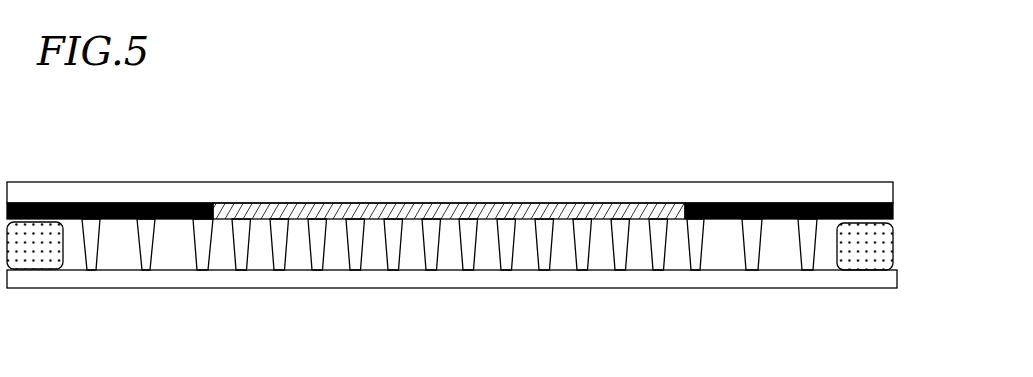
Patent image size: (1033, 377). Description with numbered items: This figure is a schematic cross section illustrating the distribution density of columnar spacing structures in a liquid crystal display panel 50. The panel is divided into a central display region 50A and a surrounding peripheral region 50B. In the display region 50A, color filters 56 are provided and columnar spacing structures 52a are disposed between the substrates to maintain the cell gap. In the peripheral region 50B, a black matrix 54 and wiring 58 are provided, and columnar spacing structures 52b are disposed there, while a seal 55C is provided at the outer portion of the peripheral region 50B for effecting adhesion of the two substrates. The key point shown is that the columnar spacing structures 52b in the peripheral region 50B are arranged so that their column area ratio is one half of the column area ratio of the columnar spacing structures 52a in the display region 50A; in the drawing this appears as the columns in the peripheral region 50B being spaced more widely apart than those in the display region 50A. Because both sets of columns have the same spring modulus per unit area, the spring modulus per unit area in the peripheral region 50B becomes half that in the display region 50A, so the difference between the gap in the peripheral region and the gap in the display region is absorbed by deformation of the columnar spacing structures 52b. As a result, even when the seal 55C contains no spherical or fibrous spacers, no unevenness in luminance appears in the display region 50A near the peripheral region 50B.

The liquid crystal display panel 50 is at (730, 86).
The display region 50A is at (215, 288).
The peripheral region 50B is at (10, 288).
The columnar spacing structures 52a is at (470, 227).
The columnar spacing structures 52b is at (148, 215).
The black matrix 54 is at (753, 213).
The seal 55C is at (33, 246).
The color filters 56 is at (600, 215).
The wiring 58 is at (775, 270).